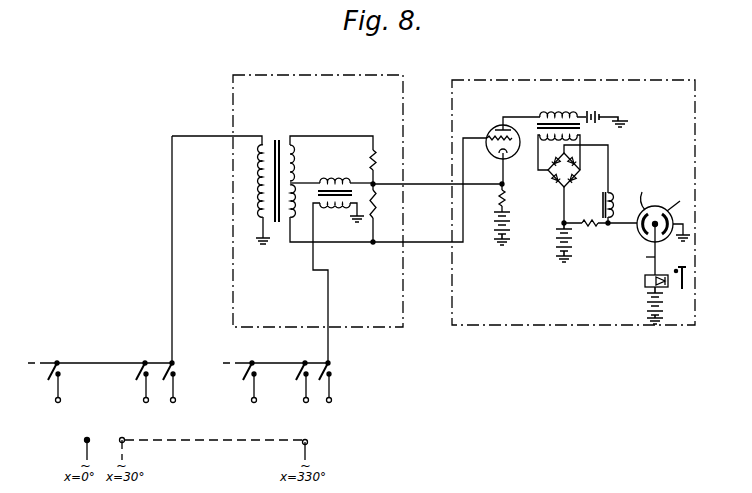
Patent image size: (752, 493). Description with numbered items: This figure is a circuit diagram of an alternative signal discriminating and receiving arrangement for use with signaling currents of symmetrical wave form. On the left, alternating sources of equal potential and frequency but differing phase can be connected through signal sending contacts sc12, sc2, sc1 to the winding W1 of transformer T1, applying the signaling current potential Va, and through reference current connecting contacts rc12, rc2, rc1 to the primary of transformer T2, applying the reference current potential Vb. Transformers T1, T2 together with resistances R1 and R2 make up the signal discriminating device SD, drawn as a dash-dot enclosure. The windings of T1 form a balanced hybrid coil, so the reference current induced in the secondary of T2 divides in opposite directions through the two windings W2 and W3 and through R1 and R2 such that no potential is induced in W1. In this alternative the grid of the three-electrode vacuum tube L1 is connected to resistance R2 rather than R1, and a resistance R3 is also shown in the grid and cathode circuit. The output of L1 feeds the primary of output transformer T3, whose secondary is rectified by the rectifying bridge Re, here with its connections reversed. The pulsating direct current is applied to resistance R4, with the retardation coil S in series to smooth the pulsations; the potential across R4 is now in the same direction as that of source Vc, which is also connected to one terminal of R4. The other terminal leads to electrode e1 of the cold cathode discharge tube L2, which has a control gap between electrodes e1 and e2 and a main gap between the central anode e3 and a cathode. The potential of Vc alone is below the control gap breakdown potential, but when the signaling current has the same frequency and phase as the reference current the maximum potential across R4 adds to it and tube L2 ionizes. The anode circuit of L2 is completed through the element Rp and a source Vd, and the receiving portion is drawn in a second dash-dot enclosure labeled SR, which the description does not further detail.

The signal discriminating device SD is at (318, 201).
The selector relay unit SR is at (573, 202).
The transformer T1 is at (276, 170).
The winding W1 is at (249, 181).
The winding W2 is at (304, 163).
The winding W3 is at (303, 202).
The transformer T2 is at (335, 186).
The output transformer T3 is at (558, 116).
The resistance R1 is at (382, 161).
The resistance R2 is at (382, 204).
The resistor R3 is at (512, 202).
The resistance R4 is at (590, 234).
The rectifying bridge Re is at (578, 174).
The photo-resistor Rp is at (651, 281).
The three-electrode vacuum tube L1 is at (513, 150).
The cold cathode discharge tube L2 is at (663, 231).
The retardation coil S is at (617, 205).
The signaling current potential Va is at (185, 249).
The reference current potential Vb is at (333, 283).
The source Vc is at (556, 242).
The supply battery Vd is at (644, 305).
The electrode e1 is at (645, 193).
The electrode e2 is at (682, 208).
The central electrode or anode e3 is at (640, 260).
The signal sending contact sc12 is at (39, 382).
The signal sending contact sc2 is at (133, 382).
The signal sending contact sc1 is at (163, 382).
The reference current connecting contact rc12 is at (241, 382).
The reference current connecting contact rc2 is at (296, 382).
The reference current connecting contact rc1 is at (321, 382).